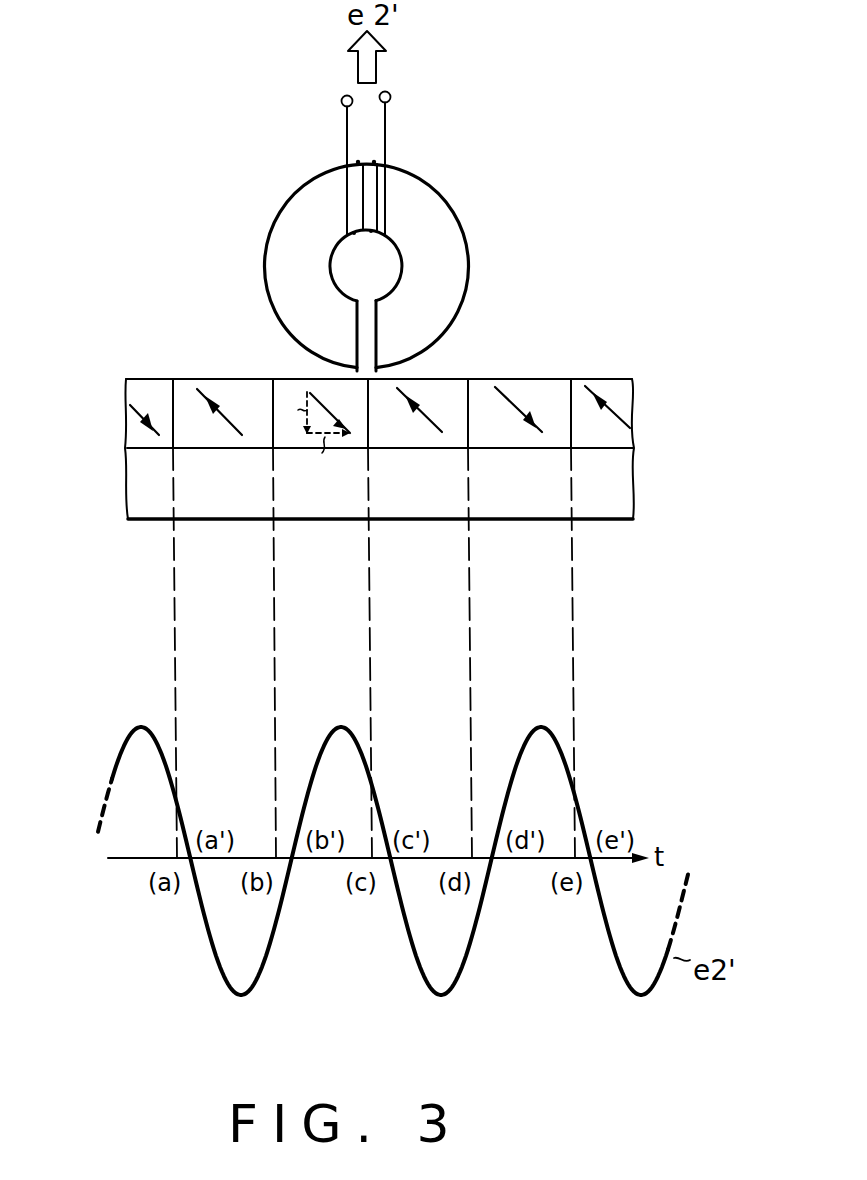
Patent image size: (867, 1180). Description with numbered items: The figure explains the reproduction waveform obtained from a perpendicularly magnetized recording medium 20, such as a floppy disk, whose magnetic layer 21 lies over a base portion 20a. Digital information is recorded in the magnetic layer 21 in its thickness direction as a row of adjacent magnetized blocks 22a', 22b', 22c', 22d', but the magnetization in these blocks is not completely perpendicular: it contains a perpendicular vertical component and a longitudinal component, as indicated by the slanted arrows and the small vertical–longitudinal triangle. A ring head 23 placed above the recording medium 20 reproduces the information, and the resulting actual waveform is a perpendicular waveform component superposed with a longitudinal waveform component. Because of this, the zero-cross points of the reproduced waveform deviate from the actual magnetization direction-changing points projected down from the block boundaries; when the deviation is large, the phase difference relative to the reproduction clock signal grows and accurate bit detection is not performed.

The recording medium 20 is at (377, 413).
The substrate of recording medium 20a is at (130, 485).
The magnetic layer 21 is at (393, 394).
The magnetized block 22a' is at (290, 408).
The magnetized block 22b' is at (450, 382).
The magnetized block 22c' is at (197, 371).
The magnetized block 22d' is at (535, 370).
The ring head 23 is at (440, 200).